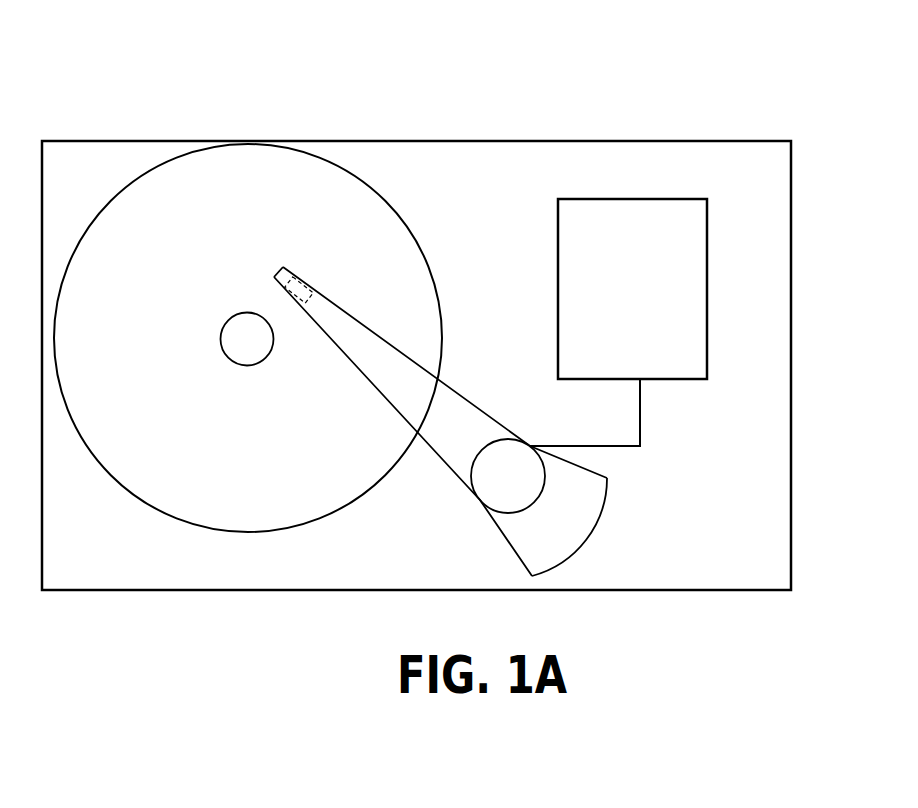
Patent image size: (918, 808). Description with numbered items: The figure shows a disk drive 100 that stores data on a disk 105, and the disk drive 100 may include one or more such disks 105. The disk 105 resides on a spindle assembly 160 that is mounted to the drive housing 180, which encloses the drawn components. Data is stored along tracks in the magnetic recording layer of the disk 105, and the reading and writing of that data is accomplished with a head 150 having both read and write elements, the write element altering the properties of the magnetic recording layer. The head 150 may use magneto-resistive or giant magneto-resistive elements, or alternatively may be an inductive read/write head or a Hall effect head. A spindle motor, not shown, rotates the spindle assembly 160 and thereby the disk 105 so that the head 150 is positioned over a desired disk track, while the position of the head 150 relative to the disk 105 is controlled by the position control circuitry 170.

The disk drive 100 is at (761, 74).
The disk 105 is at (155, 512).
The head 150 is at (296, 271).
The spindle assembly 160 is at (247, 339).
The position control circuitry 170 is at (632, 289).
The drive housing 180 is at (498, 141).